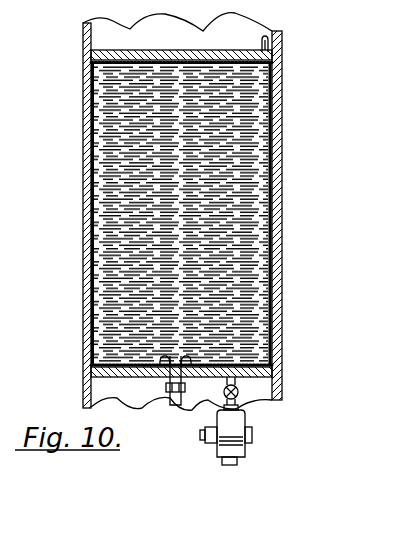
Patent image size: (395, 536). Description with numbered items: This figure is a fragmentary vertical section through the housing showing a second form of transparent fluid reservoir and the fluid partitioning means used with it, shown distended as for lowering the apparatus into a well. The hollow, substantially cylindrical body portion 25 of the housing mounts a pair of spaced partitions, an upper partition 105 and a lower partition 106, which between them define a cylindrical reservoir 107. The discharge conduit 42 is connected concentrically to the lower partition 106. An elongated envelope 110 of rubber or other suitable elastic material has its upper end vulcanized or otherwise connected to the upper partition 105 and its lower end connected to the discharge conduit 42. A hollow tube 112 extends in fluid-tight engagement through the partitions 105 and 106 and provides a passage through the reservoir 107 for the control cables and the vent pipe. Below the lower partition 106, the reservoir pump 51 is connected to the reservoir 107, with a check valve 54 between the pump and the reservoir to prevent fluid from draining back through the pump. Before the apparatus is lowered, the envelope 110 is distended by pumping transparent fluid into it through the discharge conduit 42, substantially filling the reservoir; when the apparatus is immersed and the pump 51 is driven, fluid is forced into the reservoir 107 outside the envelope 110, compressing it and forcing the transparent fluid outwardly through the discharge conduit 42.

The upper partition 105 is at (150, 55).
The hollow tube 112 is at (270, 47).
The elongated envelope 110 is at (282, 119).
The body portion 25 is at (276, 180).
The cylindrical reservoir 107 is at (271, 251).
The lower partition 106 is at (100, 379).
The discharge conduit 42 is at (171, 397).
The check valve 54 is at (240, 396).
The reservoir pump 51 is at (247, 449).